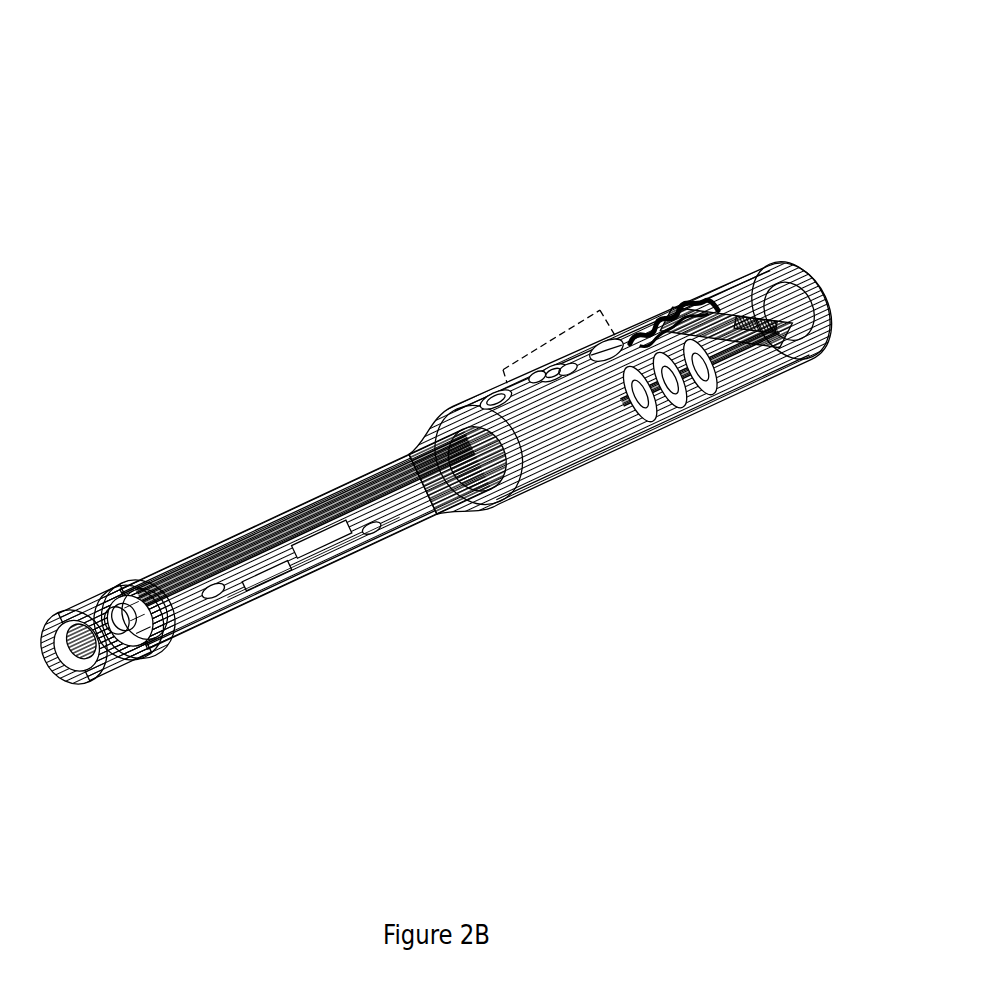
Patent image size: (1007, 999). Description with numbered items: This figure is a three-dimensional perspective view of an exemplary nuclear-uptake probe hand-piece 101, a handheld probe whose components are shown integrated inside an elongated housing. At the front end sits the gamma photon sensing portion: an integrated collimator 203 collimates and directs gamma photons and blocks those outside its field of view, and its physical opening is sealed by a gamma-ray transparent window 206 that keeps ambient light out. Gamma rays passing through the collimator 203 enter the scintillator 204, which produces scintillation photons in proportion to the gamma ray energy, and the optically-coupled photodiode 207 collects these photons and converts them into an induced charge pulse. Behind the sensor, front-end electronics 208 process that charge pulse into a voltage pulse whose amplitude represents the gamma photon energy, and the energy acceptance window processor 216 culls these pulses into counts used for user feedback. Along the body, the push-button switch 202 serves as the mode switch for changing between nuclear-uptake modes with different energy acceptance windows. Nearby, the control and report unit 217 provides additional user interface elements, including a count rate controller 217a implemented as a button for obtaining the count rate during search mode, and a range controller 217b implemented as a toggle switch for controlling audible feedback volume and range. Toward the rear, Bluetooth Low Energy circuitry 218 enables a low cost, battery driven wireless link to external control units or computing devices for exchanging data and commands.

The nuclear-uptake probe hand-piece 101 is at (729, 102).
The push-button switch 202 is at (503, 399).
The integrated collimator 203 is at (76, 607).
The scintillator 204 is at (106, 622).
The gamma-ray transparent window 206 is at (100, 680).
The optically-coupled photodiode 207 is at (112, 611).
The front-end electronics 208 is at (170, 643).
The energy acceptance window processor 216 is at (318, 510).
The control and report unit 217 is at (512, 366).
The count rate controller 217a is at (598, 343).
The range controller 217b is at (548, 370).
The Bluetooth Low Energy circuitry 218 is at (753, 300).